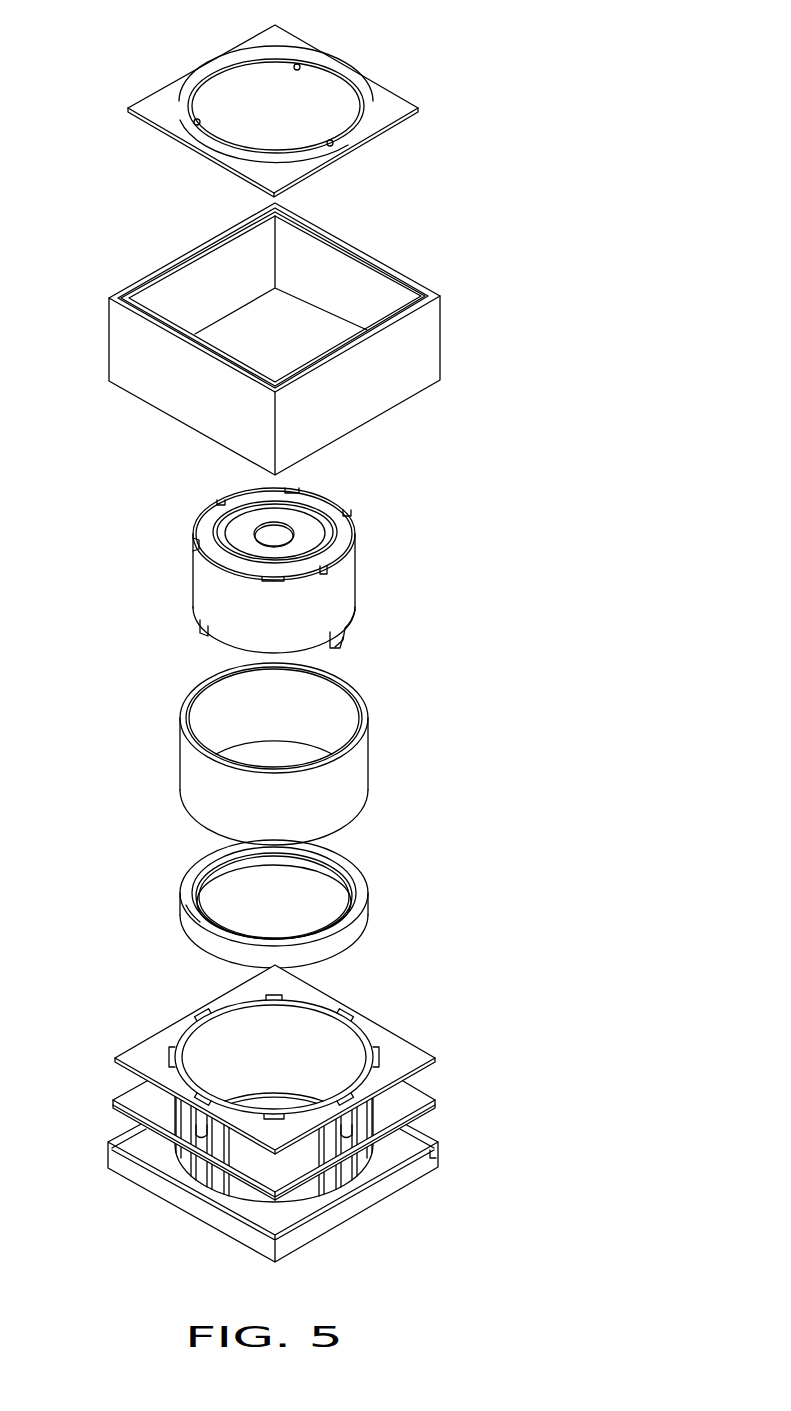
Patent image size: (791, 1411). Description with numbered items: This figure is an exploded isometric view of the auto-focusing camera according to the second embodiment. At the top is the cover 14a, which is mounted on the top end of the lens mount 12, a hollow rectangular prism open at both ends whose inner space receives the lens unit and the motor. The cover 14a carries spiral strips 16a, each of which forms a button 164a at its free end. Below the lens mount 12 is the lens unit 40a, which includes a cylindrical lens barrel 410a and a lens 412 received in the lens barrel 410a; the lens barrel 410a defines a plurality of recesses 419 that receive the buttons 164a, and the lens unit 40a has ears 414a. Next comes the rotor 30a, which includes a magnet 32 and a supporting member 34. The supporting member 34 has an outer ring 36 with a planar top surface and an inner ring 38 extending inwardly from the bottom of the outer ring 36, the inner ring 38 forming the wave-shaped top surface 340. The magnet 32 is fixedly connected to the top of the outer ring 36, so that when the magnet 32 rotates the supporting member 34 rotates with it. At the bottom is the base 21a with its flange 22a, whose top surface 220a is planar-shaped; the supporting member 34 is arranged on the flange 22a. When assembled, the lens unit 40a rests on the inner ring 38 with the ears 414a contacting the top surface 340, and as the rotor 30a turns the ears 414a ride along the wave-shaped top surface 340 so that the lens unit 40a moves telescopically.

The cover 14a is at (334, 101).
The strips 16a is at (312, 84).
The button 164a is at (298, 66).
The lens mount 12 is at (425, 362).
The lens unit 40a is at (295, 568).
The lens barrel 410a is at (330, 612).
The lens 412 is at (303, 527).
The recesses 419 is at (195, 546).
The ears 414a is at (200, 628).
The rotor 30a is at (322, 815).
The magnet 32 is at (345, 782).
The supporting member 34 is at (286, 891).
The wave-shaped top surface 340 is at (222, 871).
The outer ring 36 is at (195, 918).
The inner ring 38 is at (285, 860).
The top surface 220a is at (275, 1088).
The flange 22a is at (393, 1140).
The base 21a is at (405, 1172).